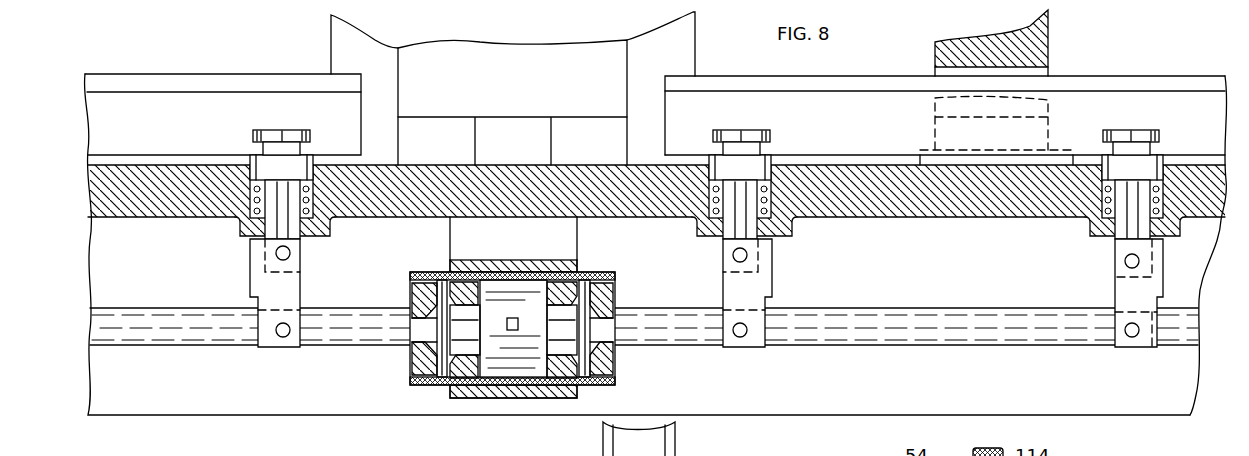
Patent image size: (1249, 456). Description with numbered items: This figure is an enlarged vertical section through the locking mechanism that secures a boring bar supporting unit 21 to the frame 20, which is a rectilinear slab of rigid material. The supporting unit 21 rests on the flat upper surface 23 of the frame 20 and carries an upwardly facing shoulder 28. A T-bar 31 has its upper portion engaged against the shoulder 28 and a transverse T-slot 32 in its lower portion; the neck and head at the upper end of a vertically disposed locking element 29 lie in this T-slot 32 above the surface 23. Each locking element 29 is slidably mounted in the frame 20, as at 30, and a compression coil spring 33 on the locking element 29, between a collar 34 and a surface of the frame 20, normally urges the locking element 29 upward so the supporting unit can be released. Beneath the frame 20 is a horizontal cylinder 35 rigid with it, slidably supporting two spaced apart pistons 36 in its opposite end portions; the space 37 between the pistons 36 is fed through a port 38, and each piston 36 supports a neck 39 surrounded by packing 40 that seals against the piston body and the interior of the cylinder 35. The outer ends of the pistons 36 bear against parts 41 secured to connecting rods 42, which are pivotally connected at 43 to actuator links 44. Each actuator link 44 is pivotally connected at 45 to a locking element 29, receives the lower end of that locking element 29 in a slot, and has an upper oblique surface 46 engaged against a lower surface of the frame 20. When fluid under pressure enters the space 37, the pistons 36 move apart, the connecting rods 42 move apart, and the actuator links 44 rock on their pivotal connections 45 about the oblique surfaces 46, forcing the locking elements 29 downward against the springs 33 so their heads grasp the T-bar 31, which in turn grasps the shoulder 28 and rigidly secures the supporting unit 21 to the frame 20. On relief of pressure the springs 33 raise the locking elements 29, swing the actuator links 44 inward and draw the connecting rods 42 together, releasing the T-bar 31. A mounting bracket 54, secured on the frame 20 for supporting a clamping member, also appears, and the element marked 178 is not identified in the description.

The frame 20 is at (975, 207).
The boring bar supporting unit 21 is at (1037, 46).
The flat upper surface 23 is at (866, 166).
The upwardly facing shoulder 28 is at (1030, 103).
The locking element 29 is at (285, 143).
The slidable mounting 30 is at (302, 223).
The T-bar 31 is at (245, 88).
The T-slot 32 is at (311, 137).
The compression coil spring 33 is at (257, 210).
The collar 34 is at (720, 165).
The horizontal cylinder 35 is at (586, 290).
The piston 36 is at (443, 362).
The space 37 is at (518, 360).
The port 38 is at (511, 330).
The neck 39 is at (468, 340).
The packing 40 is at (468, 290).
The part 41 is at (412, 350).
The connecting rod 42 is at (336, 318).
The pivotal connection 43 is at (280, 337).
The actuator link 44 is at (291, 291).
The pivotal connection 45 is at (291, 255).
The upper oblique surface 46 is at (262, 238).
The mounting bracket 54 is at (556, 53).
The bracket 178 is at (677, 455).